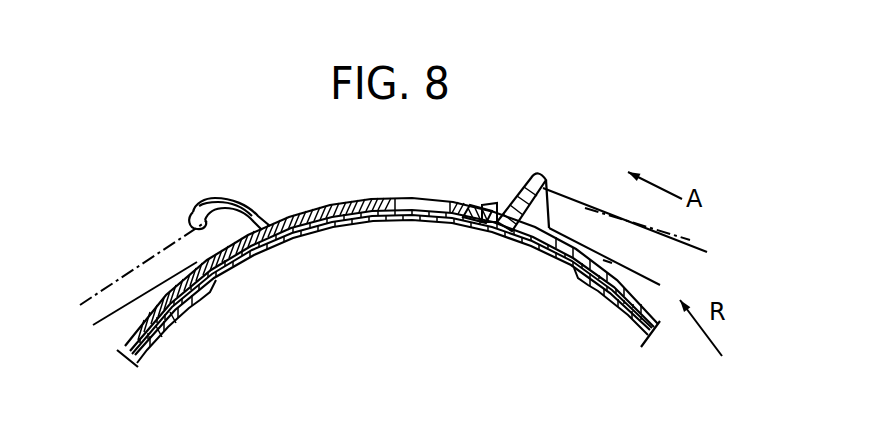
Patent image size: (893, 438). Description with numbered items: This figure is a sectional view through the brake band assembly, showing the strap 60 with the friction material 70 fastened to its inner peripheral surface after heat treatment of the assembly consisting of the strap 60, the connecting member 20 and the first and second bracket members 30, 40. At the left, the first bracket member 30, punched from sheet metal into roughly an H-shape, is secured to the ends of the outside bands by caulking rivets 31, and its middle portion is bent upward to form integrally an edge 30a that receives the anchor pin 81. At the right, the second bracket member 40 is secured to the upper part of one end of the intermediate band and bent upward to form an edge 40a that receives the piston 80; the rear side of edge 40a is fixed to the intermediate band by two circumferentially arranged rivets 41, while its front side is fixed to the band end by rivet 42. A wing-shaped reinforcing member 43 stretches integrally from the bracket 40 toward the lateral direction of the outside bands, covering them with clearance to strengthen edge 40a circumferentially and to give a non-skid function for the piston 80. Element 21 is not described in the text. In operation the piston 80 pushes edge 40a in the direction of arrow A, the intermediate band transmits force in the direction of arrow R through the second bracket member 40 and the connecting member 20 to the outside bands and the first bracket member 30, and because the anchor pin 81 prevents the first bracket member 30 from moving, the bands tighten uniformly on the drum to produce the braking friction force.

The connecting member 20 is at (373, 196).
The segmented layer of band 21 is at (353, 228).
The first bracket member 30 is at (214, 196).
The edge 30a is at (195, 207).
The caulking rivets 31 is at (170, 316).
The second bracket member 40 is at (540, 170).
The edge 40a is at (512, 183).
The rivets 41 is at (620, 310).
The rivet 42 is at (468, 230).
The reinforcing member 43 is at (662, 302).
The strap 60 is at (125, 348).
The friction material 70 is at (240, 264).
The piston 80 is at (690, 240).
The anchor pin 81 is at (103, 296).